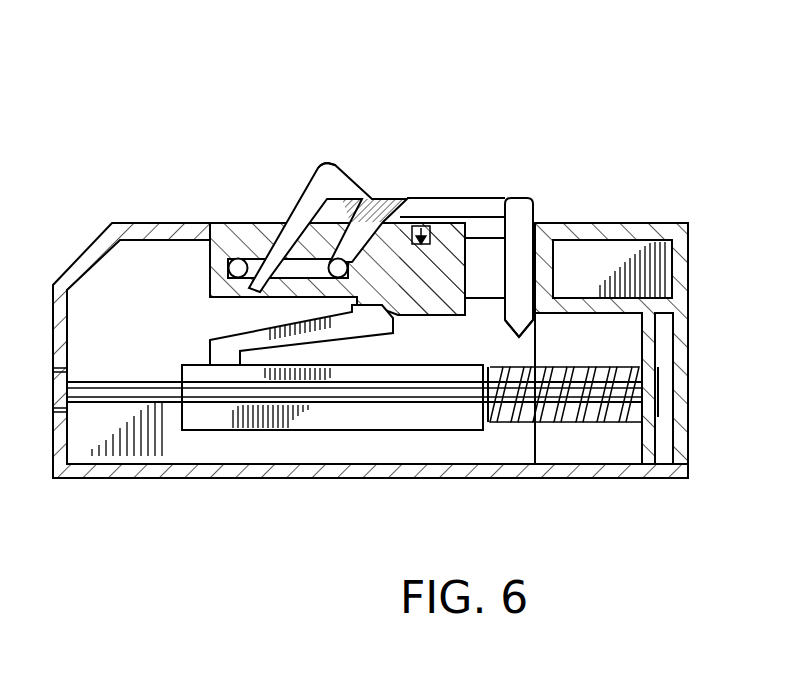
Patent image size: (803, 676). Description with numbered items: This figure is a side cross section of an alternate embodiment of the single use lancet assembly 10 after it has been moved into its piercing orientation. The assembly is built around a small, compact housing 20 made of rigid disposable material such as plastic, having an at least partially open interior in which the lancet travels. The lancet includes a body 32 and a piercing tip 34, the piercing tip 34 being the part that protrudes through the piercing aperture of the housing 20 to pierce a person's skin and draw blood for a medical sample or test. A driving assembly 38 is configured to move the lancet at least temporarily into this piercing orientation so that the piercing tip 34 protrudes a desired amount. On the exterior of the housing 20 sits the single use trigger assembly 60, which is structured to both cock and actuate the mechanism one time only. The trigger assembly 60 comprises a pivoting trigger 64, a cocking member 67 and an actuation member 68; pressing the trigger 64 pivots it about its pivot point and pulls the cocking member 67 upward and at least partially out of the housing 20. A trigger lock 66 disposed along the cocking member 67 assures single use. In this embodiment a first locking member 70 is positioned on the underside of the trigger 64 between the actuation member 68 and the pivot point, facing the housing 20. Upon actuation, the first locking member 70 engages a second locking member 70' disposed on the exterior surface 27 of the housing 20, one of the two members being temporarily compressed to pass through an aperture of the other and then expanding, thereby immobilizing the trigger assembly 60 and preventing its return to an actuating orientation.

The single use lancet assembly 10 is at (383, 309).
The housing 20 is at (614, 482).
The exterior surface 27 is at (475, 217).
The body 32 is at (305, 432).
The piercing tip 34 is at (140, 386).
The driving assembly 38 is at (527, 418).
The trigger assembly 60 is at (306, 174).
The trigger 64 is at (403, 195).
The trigger lock 66 is at (252, 258).
The cocking member 67 is at (320, 136).
The actuation member 68 is at (530, 324).
The first locking member 70 is at (436, 194).
The second locking member 70' is at (431, 289).